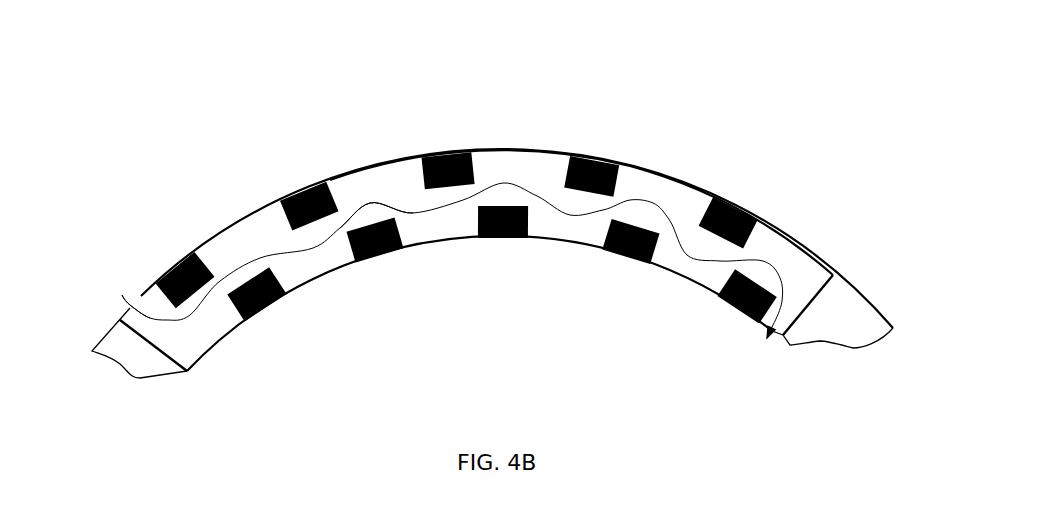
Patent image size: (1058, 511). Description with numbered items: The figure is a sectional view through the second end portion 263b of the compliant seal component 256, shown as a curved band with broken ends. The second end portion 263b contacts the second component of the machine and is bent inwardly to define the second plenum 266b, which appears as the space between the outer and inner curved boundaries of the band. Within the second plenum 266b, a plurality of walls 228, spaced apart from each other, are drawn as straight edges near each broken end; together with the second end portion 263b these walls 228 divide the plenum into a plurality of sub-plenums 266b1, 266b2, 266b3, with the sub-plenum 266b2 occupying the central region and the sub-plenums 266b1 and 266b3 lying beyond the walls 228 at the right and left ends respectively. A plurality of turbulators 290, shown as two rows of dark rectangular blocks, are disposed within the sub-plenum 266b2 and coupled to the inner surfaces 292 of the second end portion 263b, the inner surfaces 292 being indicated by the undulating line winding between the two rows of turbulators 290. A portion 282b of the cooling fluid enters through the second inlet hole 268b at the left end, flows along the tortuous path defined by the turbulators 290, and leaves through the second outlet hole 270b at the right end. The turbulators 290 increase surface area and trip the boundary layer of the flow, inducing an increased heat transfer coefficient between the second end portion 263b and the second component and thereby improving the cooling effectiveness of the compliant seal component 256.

The compliant seal component 256 is at (812, 102).
The second end portion 263b is at (702, 190).
The second plenum 266b is at (775, 250).
The sub-plenum 266b1 is at (847, 340).
The sub-plenum 266b2 is at (510, 168).
The sub-plenum 266b3 is at (127, 367).
The walls 228 is at (172, 359).
The inner surfaces 292 is at (672, 197).
The turbulators 290 is at (282, 282).
The portion of the cooling fluid 282b is at (372, 202).
The second inlet hole 268b is at (133, 297).
The second outlet hole 270b is at (775, 343).